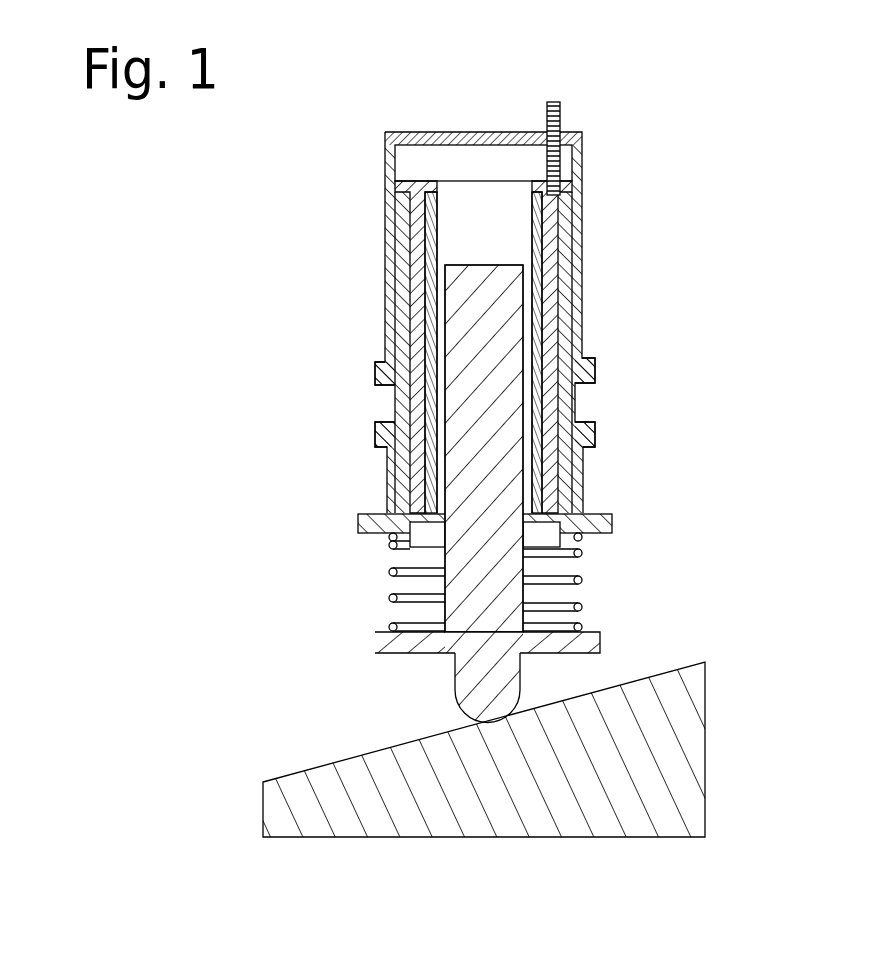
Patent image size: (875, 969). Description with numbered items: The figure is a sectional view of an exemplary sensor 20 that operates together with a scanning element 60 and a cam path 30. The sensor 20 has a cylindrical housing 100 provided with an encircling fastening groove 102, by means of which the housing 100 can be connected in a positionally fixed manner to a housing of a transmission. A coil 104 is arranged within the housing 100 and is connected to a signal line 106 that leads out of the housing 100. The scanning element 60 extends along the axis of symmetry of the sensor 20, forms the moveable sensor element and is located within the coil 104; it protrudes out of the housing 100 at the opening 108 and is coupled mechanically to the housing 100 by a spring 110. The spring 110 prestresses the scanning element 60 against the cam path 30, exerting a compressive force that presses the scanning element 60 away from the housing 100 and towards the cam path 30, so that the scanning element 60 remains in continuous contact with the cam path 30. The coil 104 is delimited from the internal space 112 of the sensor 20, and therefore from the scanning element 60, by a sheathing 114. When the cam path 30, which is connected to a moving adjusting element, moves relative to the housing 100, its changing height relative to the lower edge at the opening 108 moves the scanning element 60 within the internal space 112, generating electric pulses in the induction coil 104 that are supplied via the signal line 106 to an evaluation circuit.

The sensor 20 is at (786, 236).
The cam path 30 is at (650, 677).
The scanning element 60 is at (456, 664).
The housing 100 is at (582, 280).
The fastening groove 102 is at (578, 405).
The coil 104 is at (562, 213).
The signal line 106 is at (562, 118).
The opening 108 is at (590, 532).
The spring 110 is at (582, 607).
The internal space 112 is at (450, 245).
The sheathing 114 is at (432, 320).